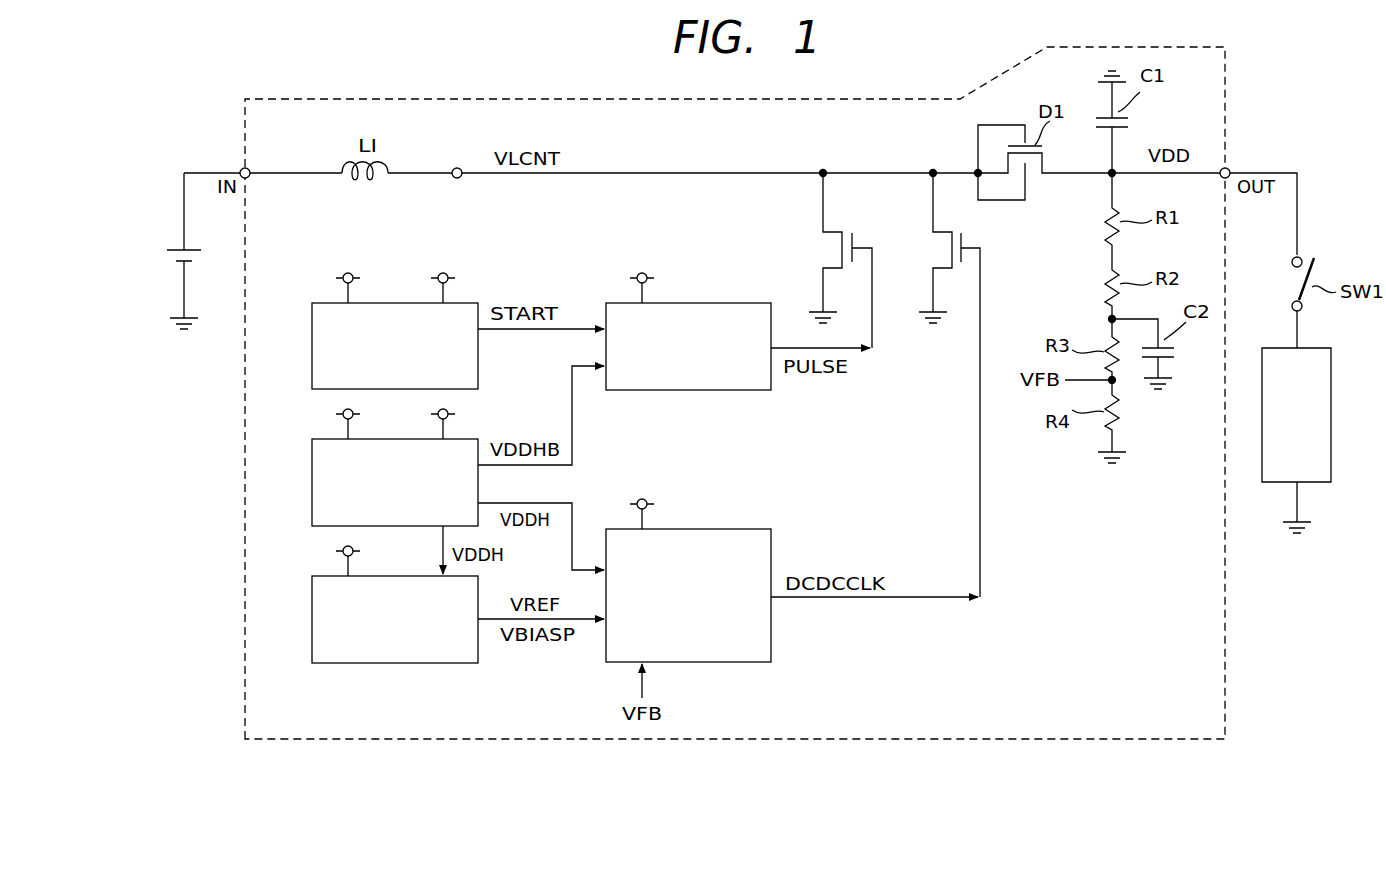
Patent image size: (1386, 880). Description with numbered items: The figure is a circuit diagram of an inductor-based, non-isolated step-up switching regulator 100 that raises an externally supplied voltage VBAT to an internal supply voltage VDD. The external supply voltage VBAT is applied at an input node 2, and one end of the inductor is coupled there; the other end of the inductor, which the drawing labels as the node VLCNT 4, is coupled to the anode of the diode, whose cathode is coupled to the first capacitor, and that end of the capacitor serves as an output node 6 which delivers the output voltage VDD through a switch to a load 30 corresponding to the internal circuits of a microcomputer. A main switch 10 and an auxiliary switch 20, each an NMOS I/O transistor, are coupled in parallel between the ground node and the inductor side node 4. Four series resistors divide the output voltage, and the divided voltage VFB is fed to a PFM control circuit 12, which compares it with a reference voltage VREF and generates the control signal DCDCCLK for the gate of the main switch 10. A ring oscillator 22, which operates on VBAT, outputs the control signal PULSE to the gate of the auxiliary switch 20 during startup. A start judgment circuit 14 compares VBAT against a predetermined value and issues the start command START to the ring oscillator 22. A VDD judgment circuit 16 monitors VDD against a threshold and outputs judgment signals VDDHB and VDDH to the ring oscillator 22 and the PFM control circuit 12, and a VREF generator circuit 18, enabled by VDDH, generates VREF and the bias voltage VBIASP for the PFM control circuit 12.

The input node 2 is at (243, 169).
The node VLCNT 4 is at (457, 168).
The output node 6 is at (1228, 169).
The main switch 10 is at (940, 248).
The PFM control circuit 12 is at (726, 662).
The start judgment circuit 14 is at (312, 345).
The VDD judgment circuit 16 is at (312, 480).
The VREF generator circuit 18 is at (312, 618).
The auxiliary switch 20 is at (172, 246).
The ring oscillator 22 is at (726, 390).
The load 30 is at (1331, 420).
The switching regulator 100 is at (1080, 739).